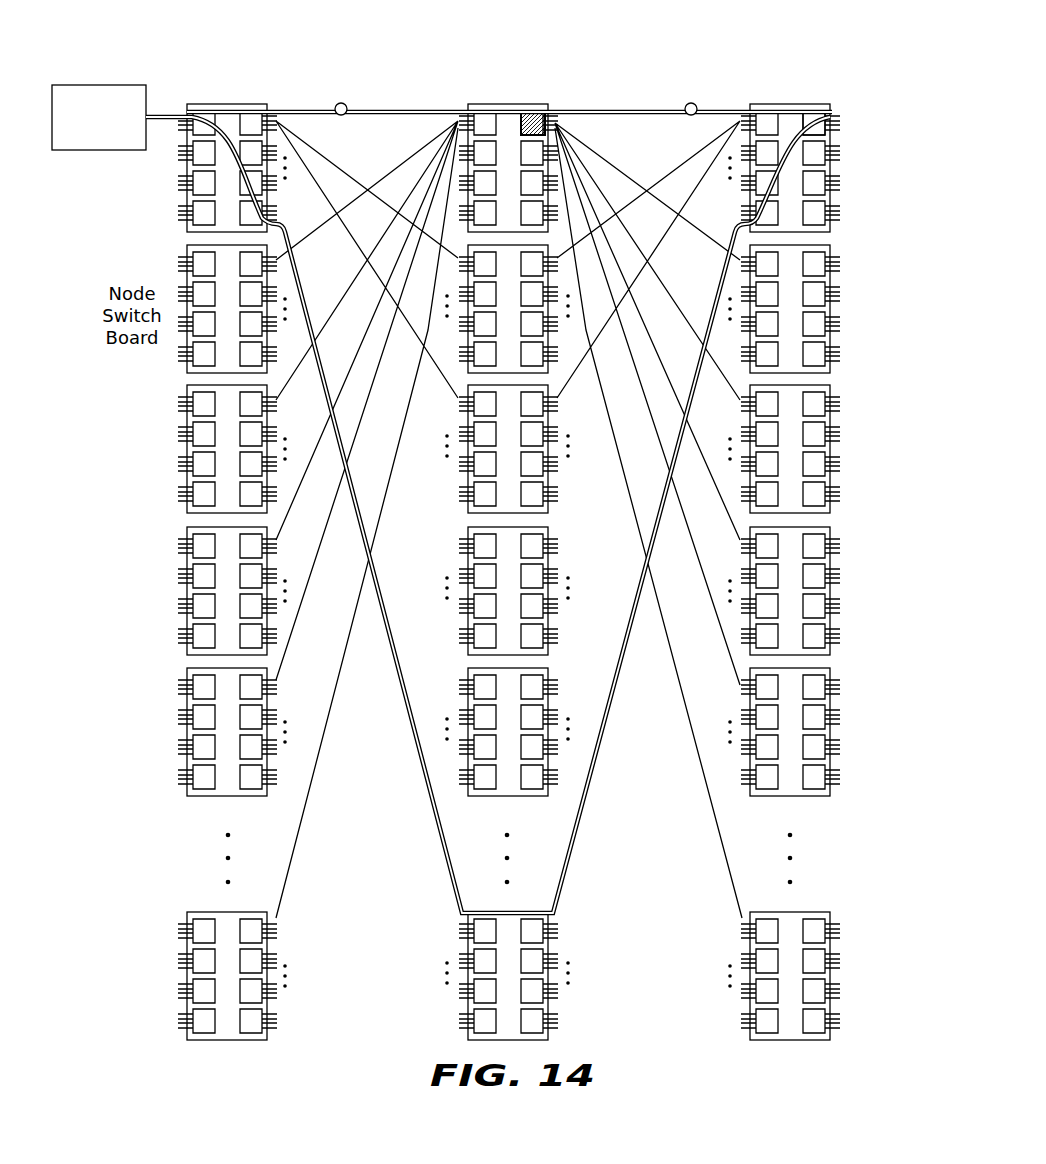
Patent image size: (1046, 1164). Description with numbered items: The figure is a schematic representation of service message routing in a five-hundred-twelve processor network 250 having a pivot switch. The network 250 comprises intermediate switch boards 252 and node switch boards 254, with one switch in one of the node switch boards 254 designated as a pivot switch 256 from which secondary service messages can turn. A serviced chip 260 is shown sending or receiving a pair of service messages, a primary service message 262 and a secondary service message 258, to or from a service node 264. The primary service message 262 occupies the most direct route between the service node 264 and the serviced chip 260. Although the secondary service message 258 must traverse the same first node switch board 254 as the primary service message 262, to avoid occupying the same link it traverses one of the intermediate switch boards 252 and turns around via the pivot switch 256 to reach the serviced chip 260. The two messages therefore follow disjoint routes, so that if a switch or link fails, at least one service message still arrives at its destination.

The network 250 is at (282, 74).
The service node 264 is at (110, 86).
The primary service message 262 is at (385, 73).
The serviced chip 260 is at (532, 108).
The secondary service message 258 is at (735, 71).
The pivot switch 256 is at (812, 112).
The node switch boards 254 is at (855, 893).
The intermediate switch boards 252 is at (522, 815).